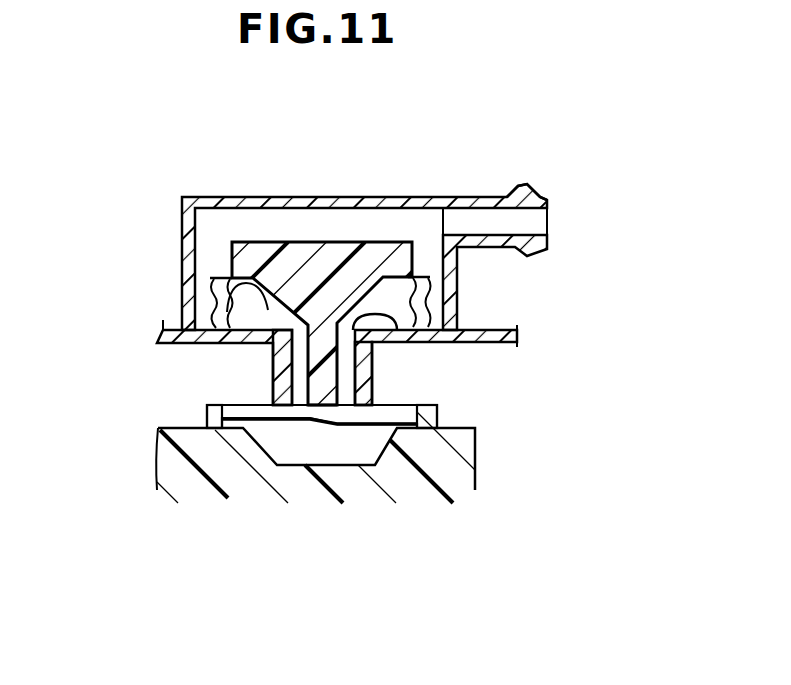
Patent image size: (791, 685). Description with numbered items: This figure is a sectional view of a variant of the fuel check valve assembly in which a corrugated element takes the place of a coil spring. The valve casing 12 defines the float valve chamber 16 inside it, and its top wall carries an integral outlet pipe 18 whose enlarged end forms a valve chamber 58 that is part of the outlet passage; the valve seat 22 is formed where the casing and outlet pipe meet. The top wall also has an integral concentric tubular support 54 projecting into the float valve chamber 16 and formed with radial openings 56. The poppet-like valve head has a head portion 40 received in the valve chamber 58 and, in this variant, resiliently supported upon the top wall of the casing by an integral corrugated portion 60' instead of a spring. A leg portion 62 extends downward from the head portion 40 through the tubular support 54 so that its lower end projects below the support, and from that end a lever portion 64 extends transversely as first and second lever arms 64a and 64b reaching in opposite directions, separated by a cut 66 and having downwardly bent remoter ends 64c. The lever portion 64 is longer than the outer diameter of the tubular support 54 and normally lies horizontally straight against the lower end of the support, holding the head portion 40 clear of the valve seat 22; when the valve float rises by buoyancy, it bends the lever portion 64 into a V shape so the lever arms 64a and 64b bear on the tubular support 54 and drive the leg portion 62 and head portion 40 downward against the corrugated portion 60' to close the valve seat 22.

The valve casing 12 is at (530, 333).
The float valve chamber 16 is at (187, 355).
The outlet pipe 18 is at (533, 197).
The valve seat 22 is at (405, 336).
The head portion 40 is at (211, 305).
The tubular support 54 is at (385, 405).
The radial openings 56 is at (372, 372).
The valve chamber 58 is at (213, 233).
The integral corrugated portion 60' is at (481, 269).
The leg portion 62 is at (290, 350).
The lever portion 64 is at (200, 413).
The first lever arm 64a is at (265, 410).
The second lever arm 64b is at (383, 406).
The downwardly bent remoter ends 64c is at (438, 415).
The cut 66 is at (316, 410).